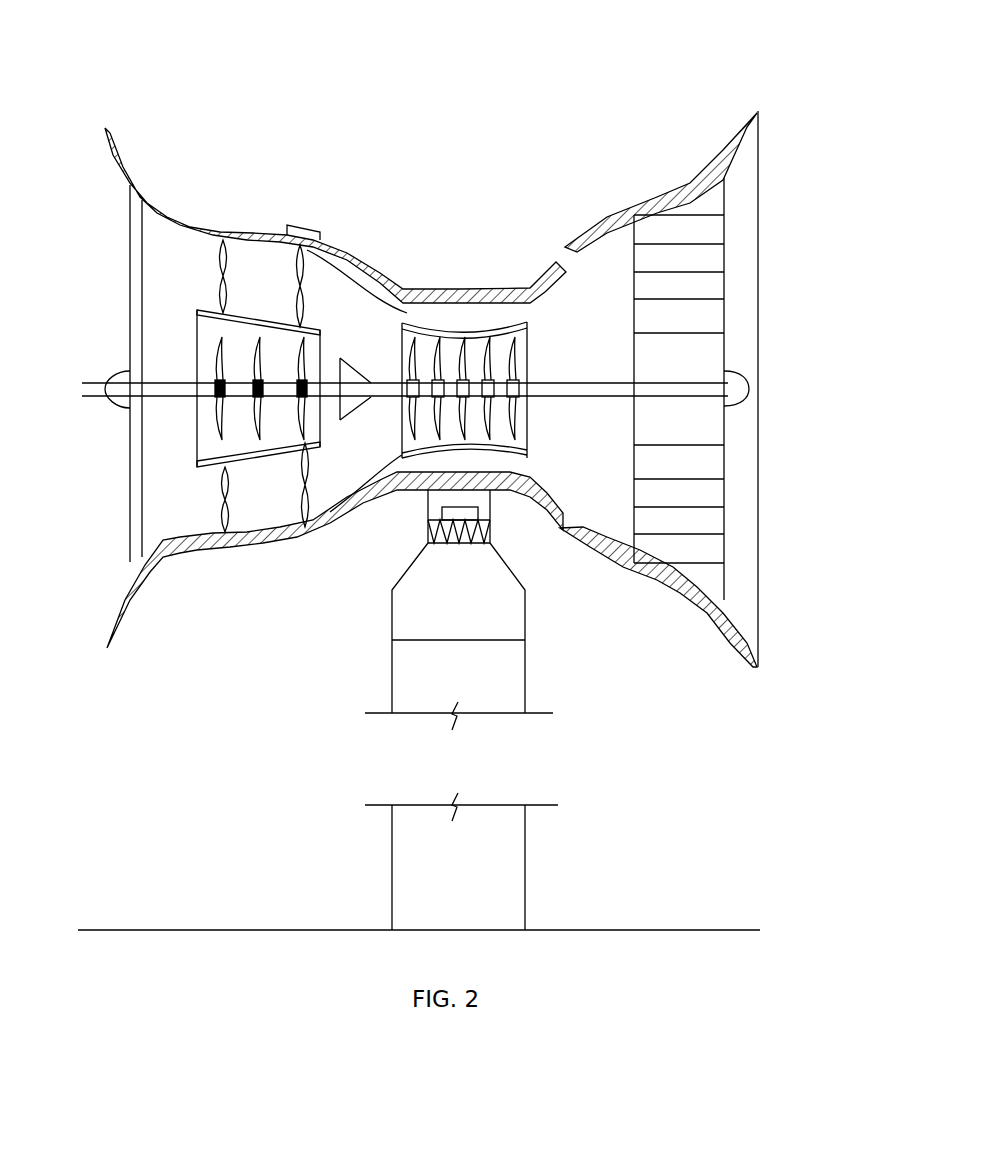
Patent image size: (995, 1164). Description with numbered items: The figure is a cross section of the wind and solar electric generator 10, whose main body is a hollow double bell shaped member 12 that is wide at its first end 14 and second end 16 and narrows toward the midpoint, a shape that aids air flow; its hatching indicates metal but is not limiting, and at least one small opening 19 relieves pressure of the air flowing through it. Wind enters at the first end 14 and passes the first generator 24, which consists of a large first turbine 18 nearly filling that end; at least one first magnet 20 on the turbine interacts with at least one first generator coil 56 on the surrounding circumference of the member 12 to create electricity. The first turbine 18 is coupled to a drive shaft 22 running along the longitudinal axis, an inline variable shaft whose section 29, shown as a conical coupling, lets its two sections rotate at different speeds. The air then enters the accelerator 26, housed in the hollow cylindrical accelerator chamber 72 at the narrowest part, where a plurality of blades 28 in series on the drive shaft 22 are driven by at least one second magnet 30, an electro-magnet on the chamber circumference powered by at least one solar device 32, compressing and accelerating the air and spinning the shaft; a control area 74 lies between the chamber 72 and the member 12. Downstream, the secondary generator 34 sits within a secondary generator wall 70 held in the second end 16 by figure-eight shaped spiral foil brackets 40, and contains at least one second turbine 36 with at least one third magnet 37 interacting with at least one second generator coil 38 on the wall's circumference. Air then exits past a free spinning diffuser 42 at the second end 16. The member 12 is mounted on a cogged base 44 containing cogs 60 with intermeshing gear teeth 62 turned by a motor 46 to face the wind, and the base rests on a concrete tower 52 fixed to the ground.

The wind and solar electric generator 10 is at (693, 125).
The double bell shaped member 12 is at (119, 186).
The first end 14 is at (758, 250).
The second end 16 is at (107, 648).
The first turbine 18 is at (717, 460).
The small opening 19 is at (567, 238).
The first magnet 20 is at (725, 233).
The drive shaft 22 is at (720, 388).
The first generator 24 is at (700, 600).
The accelerator 26 is at (507, 333).
The blade 28 is at (441, 330).
The section of the drive shaft 29 is at (340, 358).
The second magnet 30 is at (390, 280).
The solar device 32 is at (310, 230).
The secondary generator 34 is at (243, 463).
The second turbine 36 is at (260, 463).
The third magnet 37 is at (297, 243).
The second generator coil 38 is at (243, 322).
The spiral foil bracket 40 is at (218, 247).
The diffuser 42 is at (135, 552).
The cogged base 44 is at (512, 617).
The motor 46 is at (452, 510).
The tower 52 is at (510, 893).
The first generator coil 56 is at (718, 200).
The cog 60 is at (490, 528).
The gear teeth 62 is at (427, 527).
The secondary generator wall 70 is at (270, 320).
The accelerator chamber 72 is at (563, 531).
The control area 74 is at (460, 317).